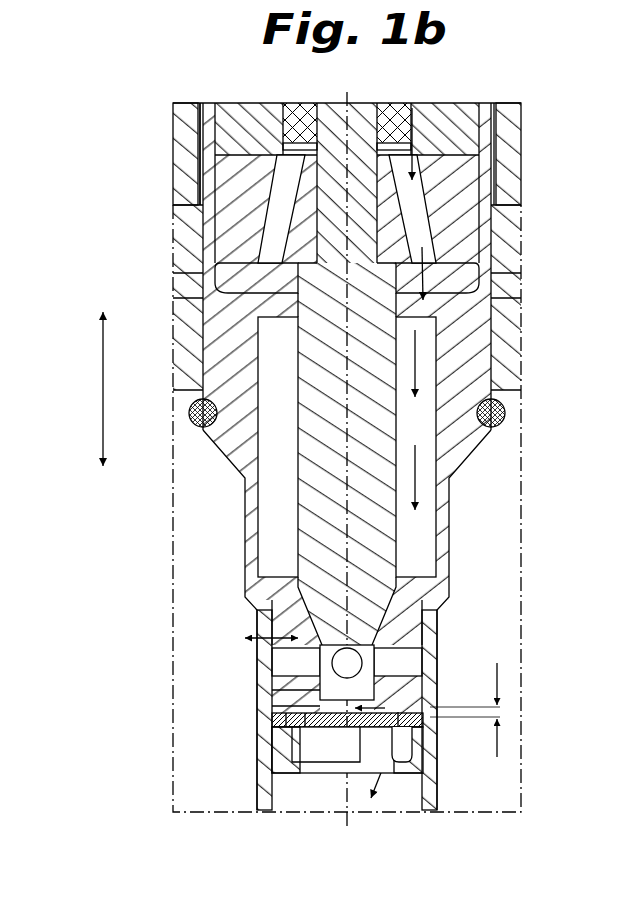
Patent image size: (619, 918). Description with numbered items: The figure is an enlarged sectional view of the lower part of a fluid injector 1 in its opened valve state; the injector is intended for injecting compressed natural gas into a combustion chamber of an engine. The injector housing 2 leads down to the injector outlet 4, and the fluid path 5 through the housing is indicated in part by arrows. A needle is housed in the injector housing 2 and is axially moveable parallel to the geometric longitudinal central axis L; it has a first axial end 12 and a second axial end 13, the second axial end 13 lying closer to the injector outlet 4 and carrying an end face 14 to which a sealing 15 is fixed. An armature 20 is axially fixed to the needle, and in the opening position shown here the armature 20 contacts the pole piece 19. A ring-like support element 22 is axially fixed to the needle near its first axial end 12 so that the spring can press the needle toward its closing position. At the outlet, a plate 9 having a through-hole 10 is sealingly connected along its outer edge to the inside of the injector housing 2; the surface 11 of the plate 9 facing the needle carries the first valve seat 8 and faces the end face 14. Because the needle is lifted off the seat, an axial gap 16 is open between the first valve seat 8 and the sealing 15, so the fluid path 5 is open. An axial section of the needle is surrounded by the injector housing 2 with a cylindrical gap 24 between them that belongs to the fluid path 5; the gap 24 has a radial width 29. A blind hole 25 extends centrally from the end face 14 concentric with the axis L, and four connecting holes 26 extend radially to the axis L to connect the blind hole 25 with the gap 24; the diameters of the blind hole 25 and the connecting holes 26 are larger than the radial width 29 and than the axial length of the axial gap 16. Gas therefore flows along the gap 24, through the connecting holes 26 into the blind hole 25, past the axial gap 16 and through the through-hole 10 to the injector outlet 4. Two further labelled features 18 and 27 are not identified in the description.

The fluid injector 1 is at (158, 170).
The injector housing 2 is at (463, 375).
The injector outlet 4 is at (397, 803).
The fluid path 5 is at (414, 474).
The first valve seat 8 is at (387, 706).
The plate 9 is at (405, 722).
The through-hole 10 is at (412, 737).
The surface 11 is at (322, 702).
The first axial end 12 is at (358, 115).
The second axial end 13 is at (290, 716).
The end face 14 is at (309, 703).
The sealing 15 is at (290, 703).
The axial gap 16 is at (499, 712).
The sleeve 18 is at (178, 120).
The pole piece 19 is at (235, 117).
The armature 20 is at (237, 235).
The ring-like support element 22 is at (400, 125).
The gap 24 is at (413, 648).
The blind hole 25 is at (356, 655).
The connecting holes 26 is at (400, 657).
The axial direction 27 is at (103, 390).
The radial width 29 is at (252, 630).
The geometric longitudinal central axis L is at (276, 101).